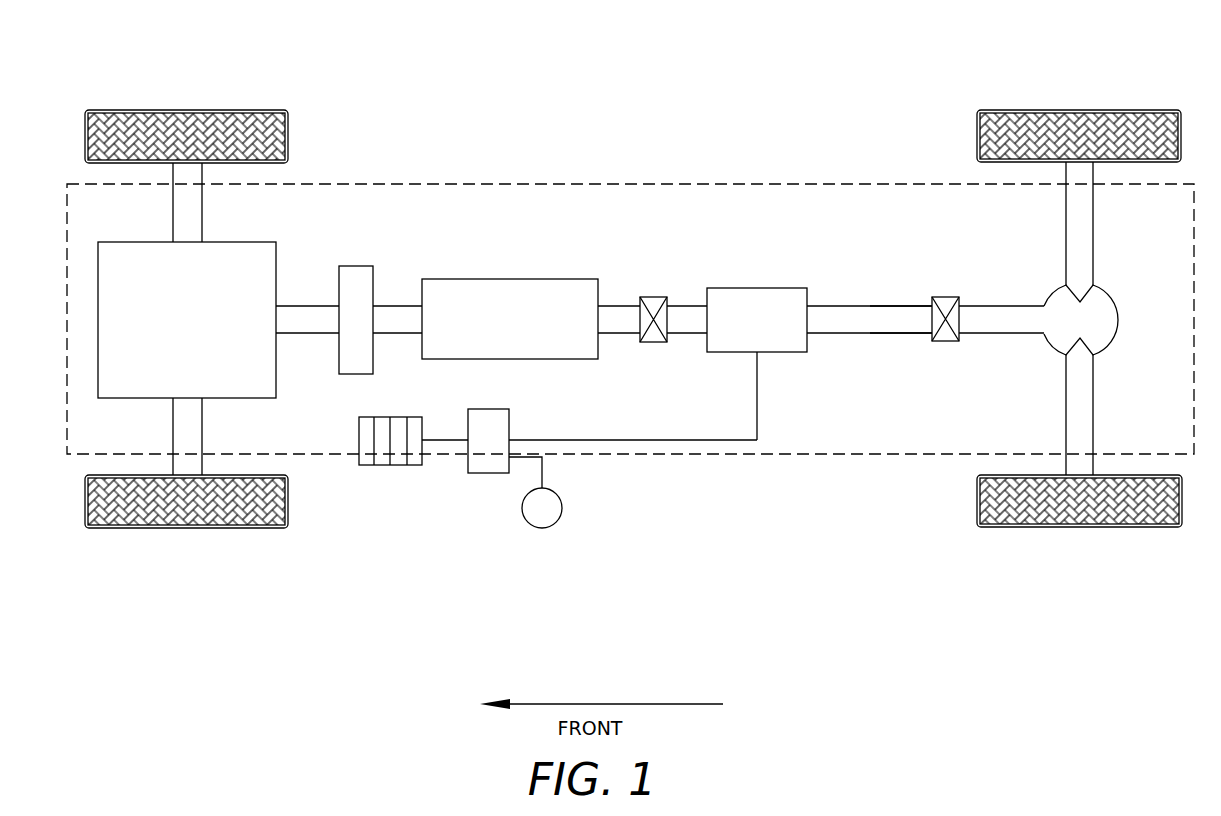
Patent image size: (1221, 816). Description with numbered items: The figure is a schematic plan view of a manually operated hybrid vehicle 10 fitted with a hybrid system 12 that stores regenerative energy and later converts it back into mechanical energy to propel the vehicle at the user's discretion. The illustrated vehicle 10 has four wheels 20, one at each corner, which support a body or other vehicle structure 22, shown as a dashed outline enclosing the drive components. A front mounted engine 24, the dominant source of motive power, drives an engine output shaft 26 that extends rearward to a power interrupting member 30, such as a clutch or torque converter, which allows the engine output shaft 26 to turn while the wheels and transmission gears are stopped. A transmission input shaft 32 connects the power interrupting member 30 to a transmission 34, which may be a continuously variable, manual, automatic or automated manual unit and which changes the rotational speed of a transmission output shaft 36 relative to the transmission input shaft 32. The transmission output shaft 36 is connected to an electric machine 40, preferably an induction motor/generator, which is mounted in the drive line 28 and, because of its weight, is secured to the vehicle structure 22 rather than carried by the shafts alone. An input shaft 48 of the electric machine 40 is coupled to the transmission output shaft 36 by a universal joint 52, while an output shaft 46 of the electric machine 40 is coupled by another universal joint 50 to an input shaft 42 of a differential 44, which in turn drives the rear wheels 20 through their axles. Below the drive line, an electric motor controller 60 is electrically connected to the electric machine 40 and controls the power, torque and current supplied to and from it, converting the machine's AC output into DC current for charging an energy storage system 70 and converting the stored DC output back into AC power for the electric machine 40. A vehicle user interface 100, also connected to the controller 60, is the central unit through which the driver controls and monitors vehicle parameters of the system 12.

The vehicle 10 is at (242, 586).
The hybrid system 12 is at (807, 615).
The wheels 20 is at (223, 115).
The vehicle structure 22 is at (800, 202).
The engine 24 is at (187, 320).
The engine output shaft 26 is at (315, 336).
The drive line 28 is at (893, 336).
The power interrupting member 30 is at (353, 264).
The transmission input shaft 32 is at (393, 303).
The transmission 34 is at (510, 319).
The transmission output shaft 36 is at (621, 337).
The electric machine 40 is at (757, 364).
The input shaft of the differential 42 is at (1000, 336).
The differential 44 is at (1103, 313).
The output shaft of the electric machine 46 is at (858, 336).
The input shaft of the electric machine 48 is at (690, 337).
The universal joint 50 is at (945, 297).
The universal joint 52 is at (651, 296).
The electric motor controller 60 is at (493, 475).
The energy storage system 70 is at (393, 467).
The vehicle user interface 100 is at (543, 530).